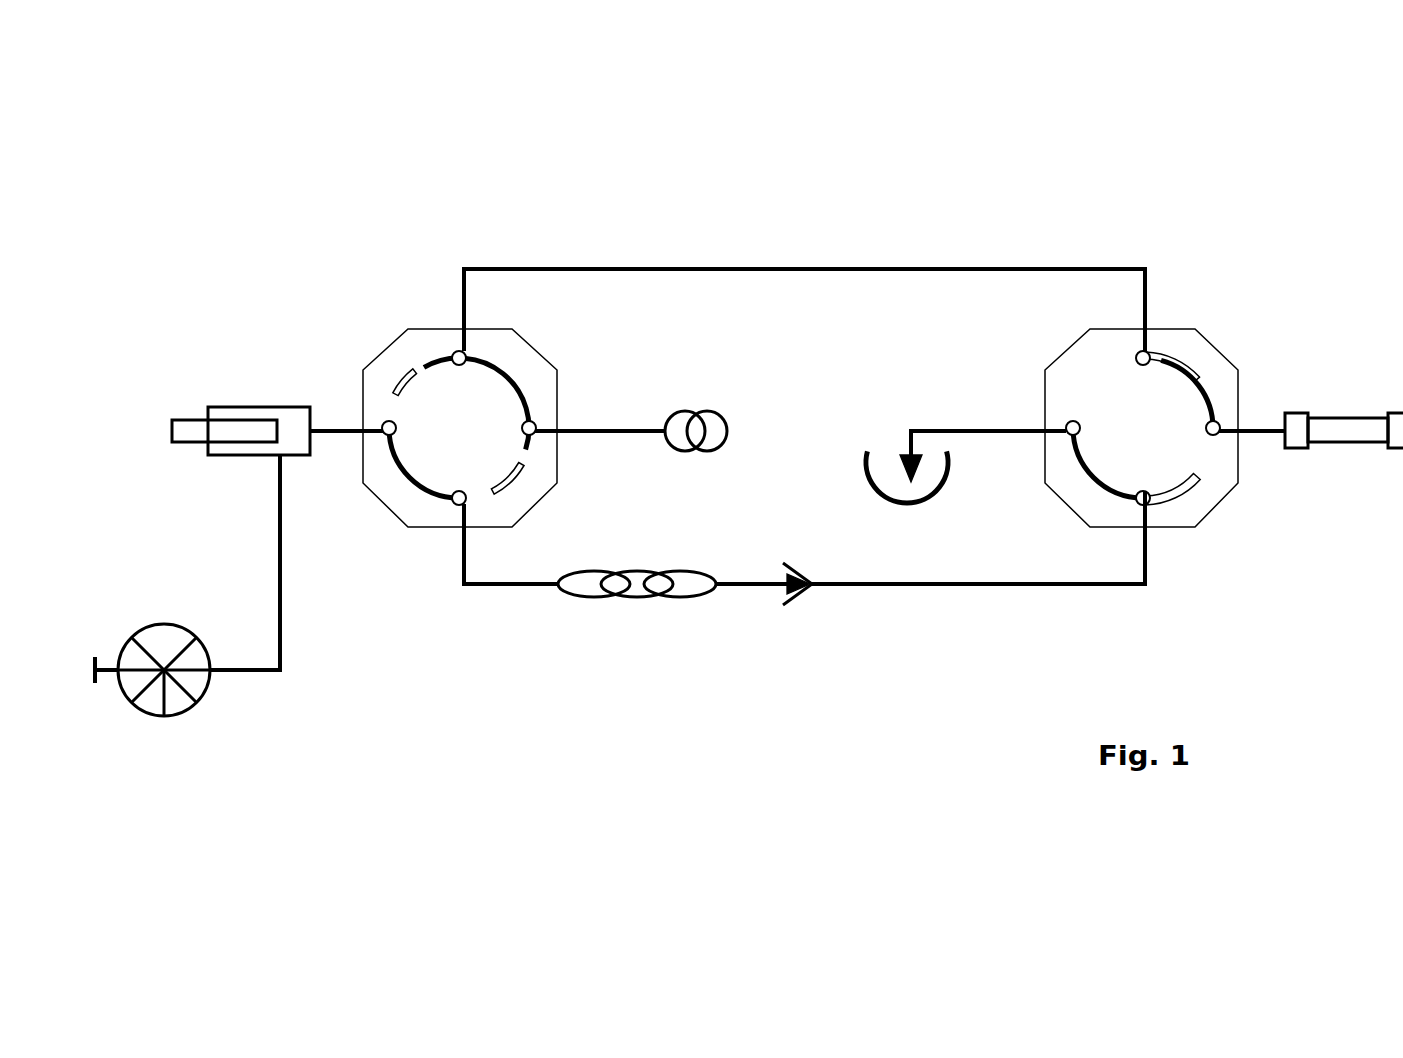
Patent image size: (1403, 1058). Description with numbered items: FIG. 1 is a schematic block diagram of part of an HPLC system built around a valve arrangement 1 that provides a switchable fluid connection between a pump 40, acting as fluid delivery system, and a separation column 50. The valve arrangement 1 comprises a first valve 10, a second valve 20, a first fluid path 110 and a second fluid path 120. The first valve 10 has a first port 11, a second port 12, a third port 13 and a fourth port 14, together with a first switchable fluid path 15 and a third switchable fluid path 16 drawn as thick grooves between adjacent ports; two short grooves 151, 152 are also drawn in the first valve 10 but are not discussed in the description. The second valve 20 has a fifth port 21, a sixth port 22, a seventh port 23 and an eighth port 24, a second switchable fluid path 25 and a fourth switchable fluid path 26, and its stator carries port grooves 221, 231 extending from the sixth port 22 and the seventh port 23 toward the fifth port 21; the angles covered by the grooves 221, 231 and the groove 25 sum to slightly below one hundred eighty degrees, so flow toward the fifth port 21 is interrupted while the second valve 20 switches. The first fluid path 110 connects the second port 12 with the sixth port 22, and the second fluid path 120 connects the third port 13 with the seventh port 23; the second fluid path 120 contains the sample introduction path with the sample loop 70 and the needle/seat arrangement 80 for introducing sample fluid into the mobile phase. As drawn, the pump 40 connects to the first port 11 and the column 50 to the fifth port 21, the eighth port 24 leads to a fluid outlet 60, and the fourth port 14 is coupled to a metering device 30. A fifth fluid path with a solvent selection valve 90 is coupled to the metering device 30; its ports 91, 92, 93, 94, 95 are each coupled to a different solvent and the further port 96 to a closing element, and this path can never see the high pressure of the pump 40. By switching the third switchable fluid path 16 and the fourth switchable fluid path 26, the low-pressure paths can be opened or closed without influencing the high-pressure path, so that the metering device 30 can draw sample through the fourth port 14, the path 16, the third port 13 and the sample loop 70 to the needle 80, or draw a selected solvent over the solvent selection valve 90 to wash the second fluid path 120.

The valve arrangement 1 is at (506, 100).
The first valve 10 is at (398, 338).
The first port 11 is at (514, 431).
The second port 12 is at (461, 373).
The third port 13 is at (461, 480).
The fourth port 14 is at (402, 431).
The first switchable fluid path 15 is at (522, 385).
The third switchable fluid path 16 is at (404, 481).
The auxiliary groove 151 is at (508, 484).
The auxiliary groove 152 is at (403, 371).
The second valve 20 is at (1236, 358).
The fifth port 21 is at (1197, 431).
The sixth port 22 is at (1145, 374).
The seventh port 23 is at (1148, 479).
The eighth port 24 is at (1090, 431).
The second switchable fluid path 25 is at (1221, 403).
The fourth switchable fluid path 26 is at (1091, 479).
The port groove 221 is at (1192, 362).
The port groove 231 is at (1188, 496).
The metering device 30 is at (250, 405).
The pump 40 is at (697, 410).
The separation column 50 is at (1353, 444).
The fluid outlet 60 is at (862, 472).
The sample loop 70 is at (631, 597).
The needle/seat arrangement 80 is at (800, 597).
The solvent selection valve 90 is at (158, 713).
The further port 91 is at (133, 643).
The further port 92 is at (194, 643).
The further port 93 is at (194, 703).
The further port 94 is at (162, 713).
The further port 95 is at (132, 704).
The further port 96 is at (96, 659).
The first fluid path 110 is at (918, 267).
The second fluid path 120 is at (895, 587).